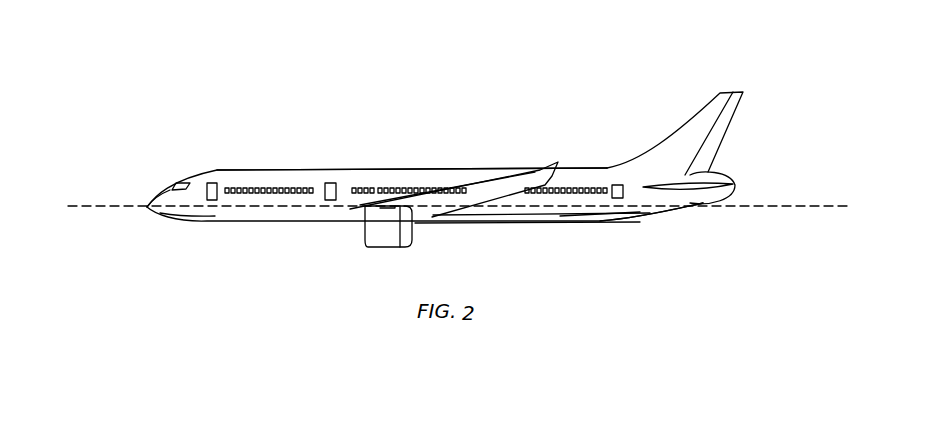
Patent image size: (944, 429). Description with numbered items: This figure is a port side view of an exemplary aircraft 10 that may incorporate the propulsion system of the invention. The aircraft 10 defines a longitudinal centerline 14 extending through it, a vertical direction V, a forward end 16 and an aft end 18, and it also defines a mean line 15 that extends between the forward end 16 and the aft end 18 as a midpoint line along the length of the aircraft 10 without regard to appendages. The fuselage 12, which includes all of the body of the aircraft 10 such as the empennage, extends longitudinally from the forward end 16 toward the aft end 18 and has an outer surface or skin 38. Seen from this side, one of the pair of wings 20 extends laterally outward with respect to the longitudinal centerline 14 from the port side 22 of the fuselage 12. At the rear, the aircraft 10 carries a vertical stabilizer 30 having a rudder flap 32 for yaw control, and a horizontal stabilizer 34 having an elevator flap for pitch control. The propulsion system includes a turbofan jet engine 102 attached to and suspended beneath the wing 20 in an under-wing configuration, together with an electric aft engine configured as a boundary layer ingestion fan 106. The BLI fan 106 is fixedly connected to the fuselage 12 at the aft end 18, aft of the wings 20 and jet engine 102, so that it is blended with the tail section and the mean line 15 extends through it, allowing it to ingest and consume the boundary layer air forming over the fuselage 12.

The aircraft 10 is at (459, 172).
The fuselage 12 is at (232, 218).
The longitudinal centerline 14 is at (90, 208).
The mean line 15 is at (585, 200).
The forward end 16 is at (150, 218).
The aft end 18 is at (668, 220).
The wings 20 is at (497, 193).
The port side 22 is at (548, 218).
The vertical stabilizer 30 is at (697, 120).
The rudder flap 32 is at (728, 117).
The horizontal stabilizers 34 is at (702, 208).
The outer surface or skin 38 is at (368, 166).
The turbofan jet engine 102 is at (364, 245).
The boundary layer ingestion (BLI) fan 106 is at (730, 160).
The vertical direction V is at (47, 44).